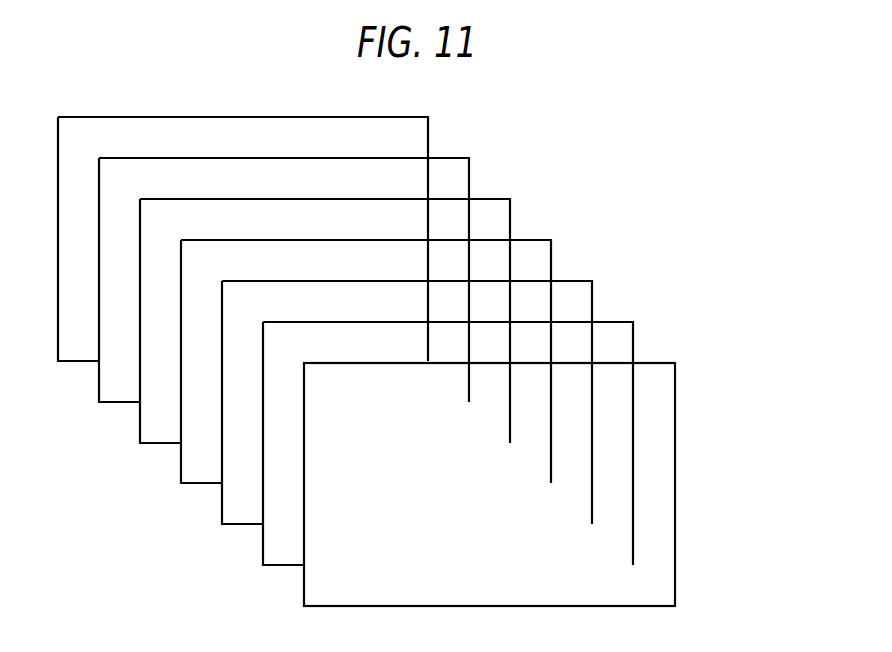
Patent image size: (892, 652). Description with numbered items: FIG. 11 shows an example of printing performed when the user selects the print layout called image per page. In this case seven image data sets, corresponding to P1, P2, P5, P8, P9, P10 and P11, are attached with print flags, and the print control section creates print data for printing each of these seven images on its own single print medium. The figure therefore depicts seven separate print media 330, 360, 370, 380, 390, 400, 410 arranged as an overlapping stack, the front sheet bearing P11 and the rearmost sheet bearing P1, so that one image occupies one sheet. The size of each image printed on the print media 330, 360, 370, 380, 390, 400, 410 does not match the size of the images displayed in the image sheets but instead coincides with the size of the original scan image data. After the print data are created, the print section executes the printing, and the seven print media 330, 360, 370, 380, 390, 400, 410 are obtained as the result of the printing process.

The print medium 330 is at (428, 133).
The print medium 360 is at (469, 174).
The print medium 370 is at (510, 215).
The print medium 380 is at (551, 254).
The print medium 390 is at (592, 295).
The print medium 400 is at (633, 336).
The print medium 410 is at (675, 377).